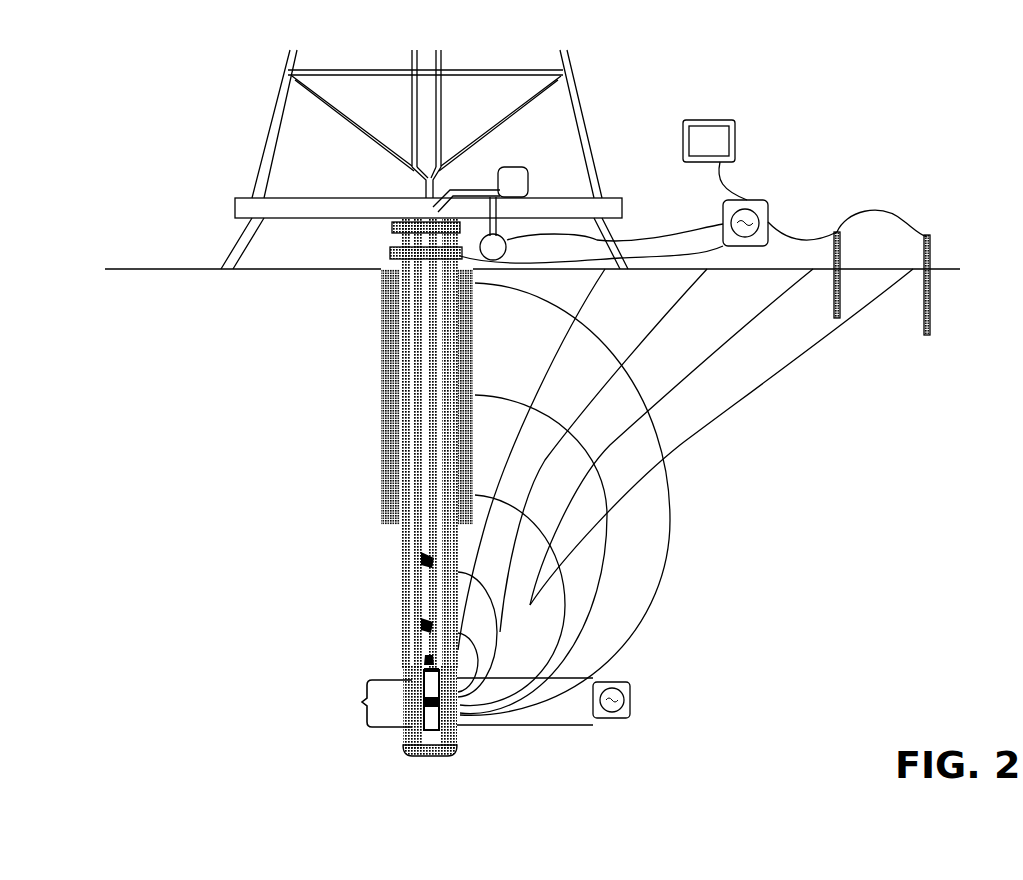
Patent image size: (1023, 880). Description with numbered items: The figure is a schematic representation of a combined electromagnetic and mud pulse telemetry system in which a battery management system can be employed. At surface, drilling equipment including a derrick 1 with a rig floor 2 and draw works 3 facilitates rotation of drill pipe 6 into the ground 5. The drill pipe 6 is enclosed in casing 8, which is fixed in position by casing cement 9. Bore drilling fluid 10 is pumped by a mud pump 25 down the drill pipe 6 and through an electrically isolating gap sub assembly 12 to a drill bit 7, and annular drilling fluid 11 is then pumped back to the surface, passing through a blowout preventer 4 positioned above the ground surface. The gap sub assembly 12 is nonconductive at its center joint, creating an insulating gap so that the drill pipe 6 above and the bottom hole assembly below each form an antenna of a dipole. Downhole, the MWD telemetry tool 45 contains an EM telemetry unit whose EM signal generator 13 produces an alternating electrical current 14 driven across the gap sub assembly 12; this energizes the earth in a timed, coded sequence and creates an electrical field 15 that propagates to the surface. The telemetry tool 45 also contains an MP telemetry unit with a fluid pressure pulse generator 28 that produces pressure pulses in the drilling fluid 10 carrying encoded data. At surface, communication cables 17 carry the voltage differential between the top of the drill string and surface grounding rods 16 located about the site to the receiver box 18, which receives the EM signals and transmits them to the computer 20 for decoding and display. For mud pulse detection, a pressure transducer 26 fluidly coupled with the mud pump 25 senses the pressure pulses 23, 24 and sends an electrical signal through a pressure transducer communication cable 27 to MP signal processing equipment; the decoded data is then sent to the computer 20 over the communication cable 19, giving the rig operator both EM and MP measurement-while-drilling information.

The derrick 1 is at (262, 128).
The rig floor 2 is at (285, 194).
The draw works 3 is at (409, 167).
The blowout preventer 4 is at (390, 229).
The ground 5 is at (138, 267).
The drill pipe 6 is at (410, 386).
The drill bit 7 is at (458, 752).
The casing 8 is at (392, 352).
The casing cement 9 is at (390, 323).
The bore drilling fluid 10 is at (428, 463).
The annular drilling fluid 11 is at (405, 418).
The gap sub assembly 12 is at (410, 727).
The EM signal generator 13 is at (633, 719).
The alternating electrical current 14 is at (672, 549).
The electrical field 15 is at (730, 409).
The surface grounding rods 16 is at (933, 252).
The communication cables 17 is at (699, 252).
The receiver box 18 is at (772, 199).
The communication cable 19 is at (746, 183).
The computer 20 is at (722, 118).
The pressure pulse 23 is at (407, 637).
The pressure pulse 24 is at (413, 552).
The mud pump 25 is at (532, 168).
The pressure transducer 26 is at (515, 230).
The pressure transducer communication cable 27 is at (658, 233).
The fluid pressure pulse generator 28 is at (410, 693).
The downhole MWD telemetry tool 45 is at (362, 702).